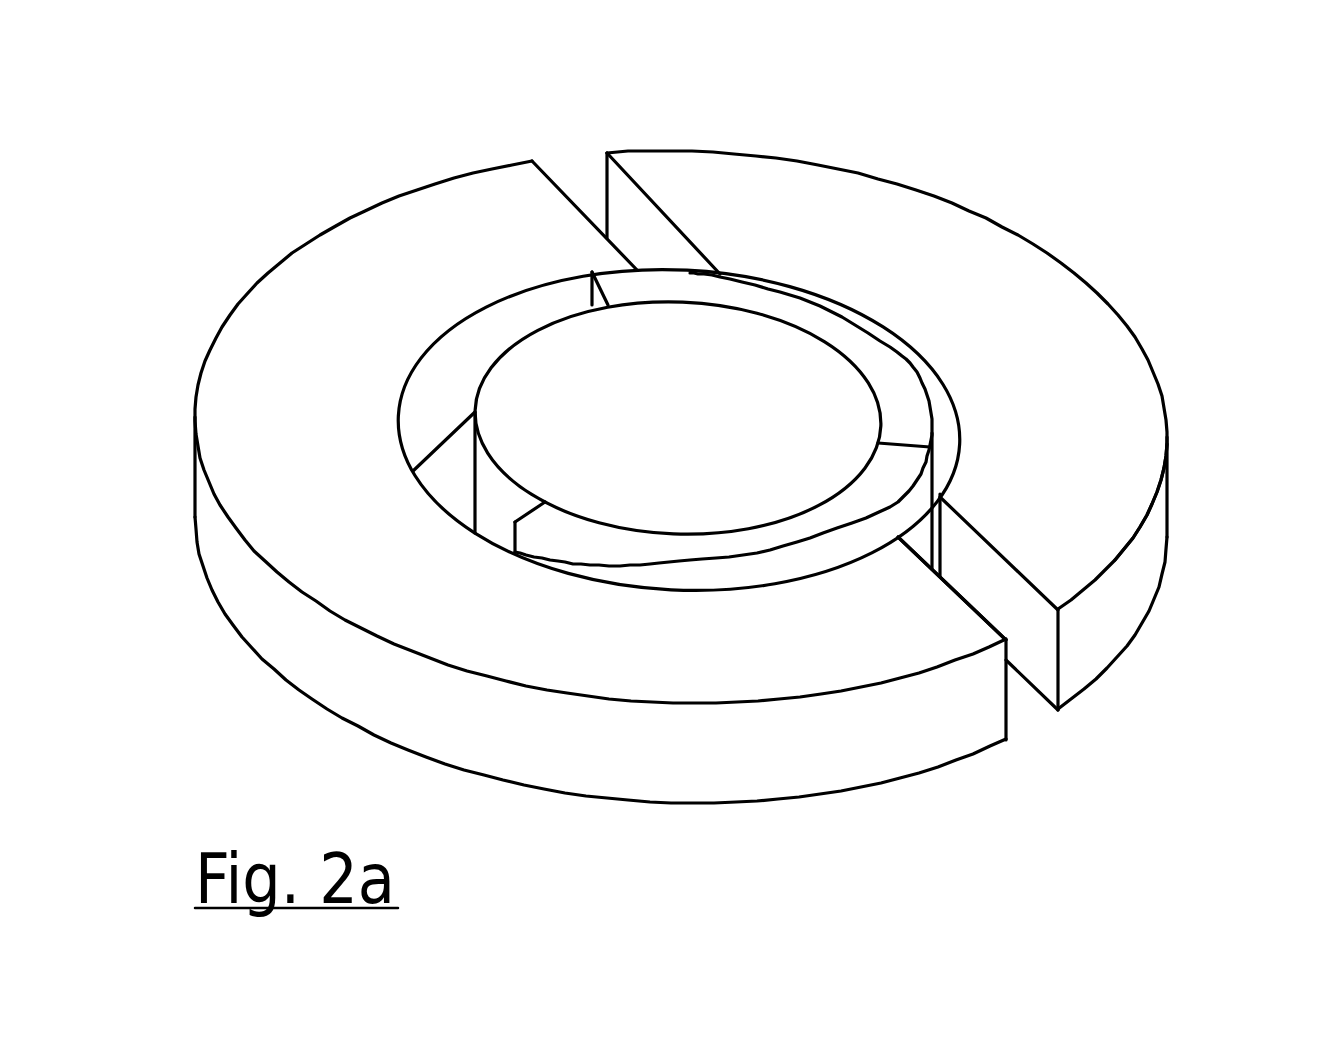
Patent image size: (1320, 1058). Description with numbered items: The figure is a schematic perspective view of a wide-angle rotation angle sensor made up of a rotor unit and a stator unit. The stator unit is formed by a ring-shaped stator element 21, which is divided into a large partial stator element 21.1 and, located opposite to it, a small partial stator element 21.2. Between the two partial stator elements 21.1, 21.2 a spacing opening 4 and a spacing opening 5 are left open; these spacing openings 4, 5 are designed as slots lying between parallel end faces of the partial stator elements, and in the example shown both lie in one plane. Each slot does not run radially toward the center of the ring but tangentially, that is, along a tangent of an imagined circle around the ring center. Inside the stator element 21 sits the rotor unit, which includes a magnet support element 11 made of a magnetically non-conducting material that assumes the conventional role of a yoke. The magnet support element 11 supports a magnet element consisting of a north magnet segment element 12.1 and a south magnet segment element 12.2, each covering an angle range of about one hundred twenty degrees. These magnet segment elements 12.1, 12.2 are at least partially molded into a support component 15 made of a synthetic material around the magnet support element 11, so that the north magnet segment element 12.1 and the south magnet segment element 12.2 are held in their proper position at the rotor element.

The stator element 21 is at (944, 197).
The spacing opening 5 is at (588, 185).
The spacing opening 4 is at (1027, 697).
The north magnet segment element 12.1 is at (853, 340).
The south magnet segment element 12.2 is at (900, 462).
The magnet support element 11 is at (535, 452).
The support component 15 is at (920, 498).
The large partial stator element 21.1 is at (938, 647).
The small partial stator element 21.2 is at (1117, 532).